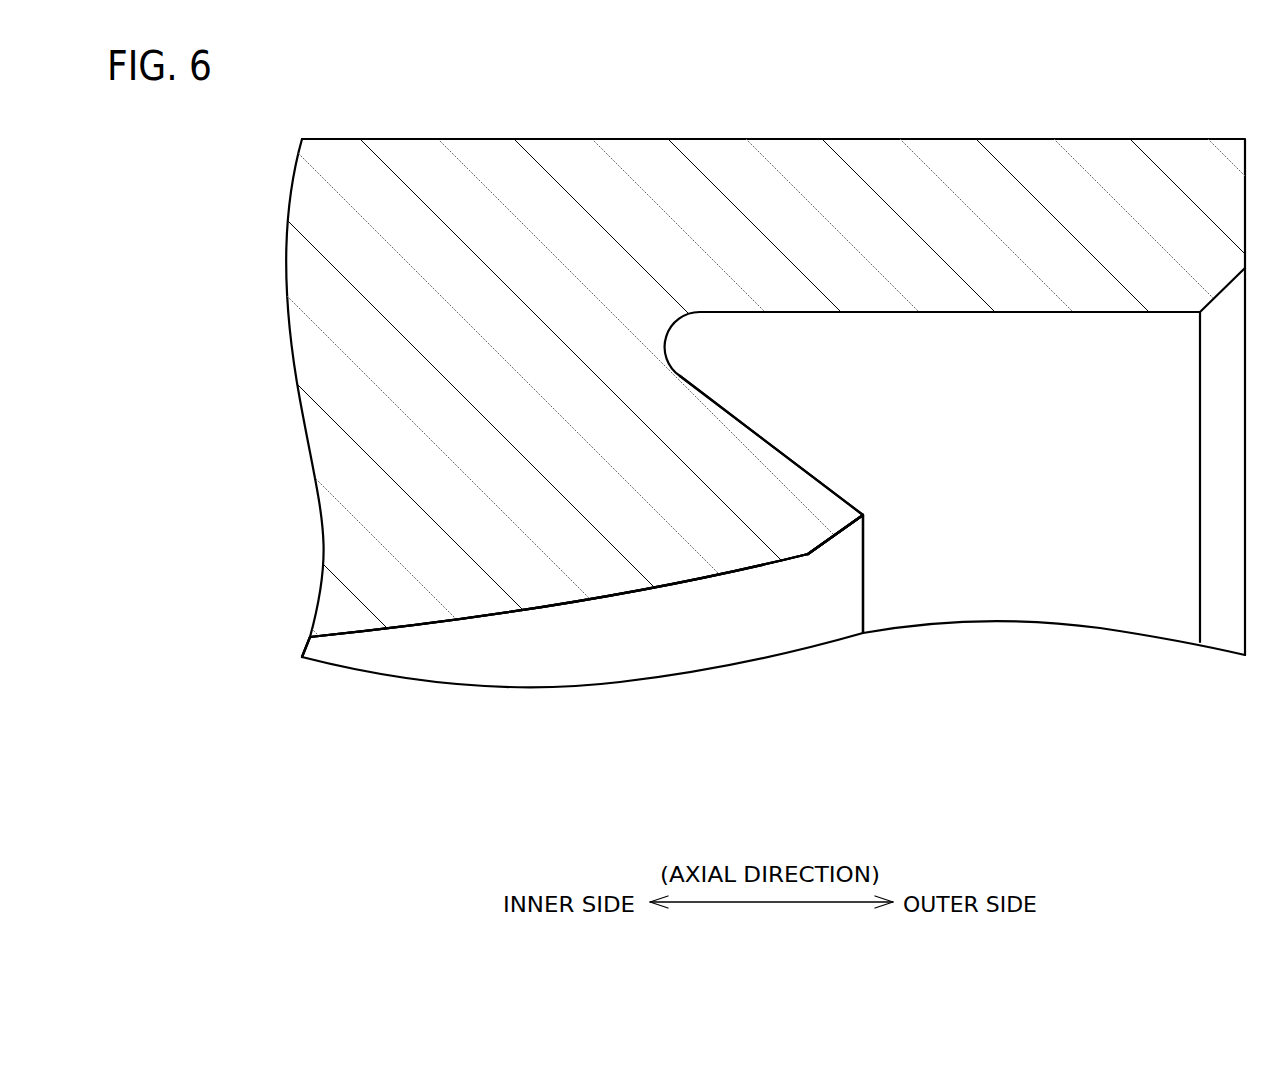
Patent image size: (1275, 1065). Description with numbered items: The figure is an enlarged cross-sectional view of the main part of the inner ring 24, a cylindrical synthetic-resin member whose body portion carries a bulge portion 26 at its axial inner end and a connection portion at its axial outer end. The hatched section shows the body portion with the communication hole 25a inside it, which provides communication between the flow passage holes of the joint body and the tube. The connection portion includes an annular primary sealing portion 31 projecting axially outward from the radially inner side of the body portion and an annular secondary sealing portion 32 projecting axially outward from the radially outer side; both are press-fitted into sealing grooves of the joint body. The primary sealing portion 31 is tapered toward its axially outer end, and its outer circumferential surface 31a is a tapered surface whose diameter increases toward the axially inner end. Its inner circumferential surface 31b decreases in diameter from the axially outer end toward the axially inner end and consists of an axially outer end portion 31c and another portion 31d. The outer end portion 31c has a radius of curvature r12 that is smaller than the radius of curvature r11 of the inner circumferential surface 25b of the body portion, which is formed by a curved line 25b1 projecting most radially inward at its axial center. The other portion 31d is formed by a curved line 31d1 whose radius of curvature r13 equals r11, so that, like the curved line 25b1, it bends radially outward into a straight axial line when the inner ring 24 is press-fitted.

The inner ring 24 is at (245, 250).
The bulge portion 26 is at (468, 185).
The secondary sealing portion 32 is at (1113, 185).
The primary sealing portion 31 is at (790, 473).
The outer circumferential surface 31a is at (745, 432).
The inner circumferential surface 31b is at (855, 768).
The axially outer end portion 31c is at (833, 543).
The other portion 31d is at (753, 570).
The curved line 31d1 is at (791, 642).
The communication hole 25a is at (612, 658).
The inner circumferential surface 25b is at (355, 633).
The curved line 25b1 is at (351, 711).
The radius of curvature r11 is at (477, 613).
The radius of curvature r12 is at (815, 550).
The radius of curvature r13 is at (559, 516).